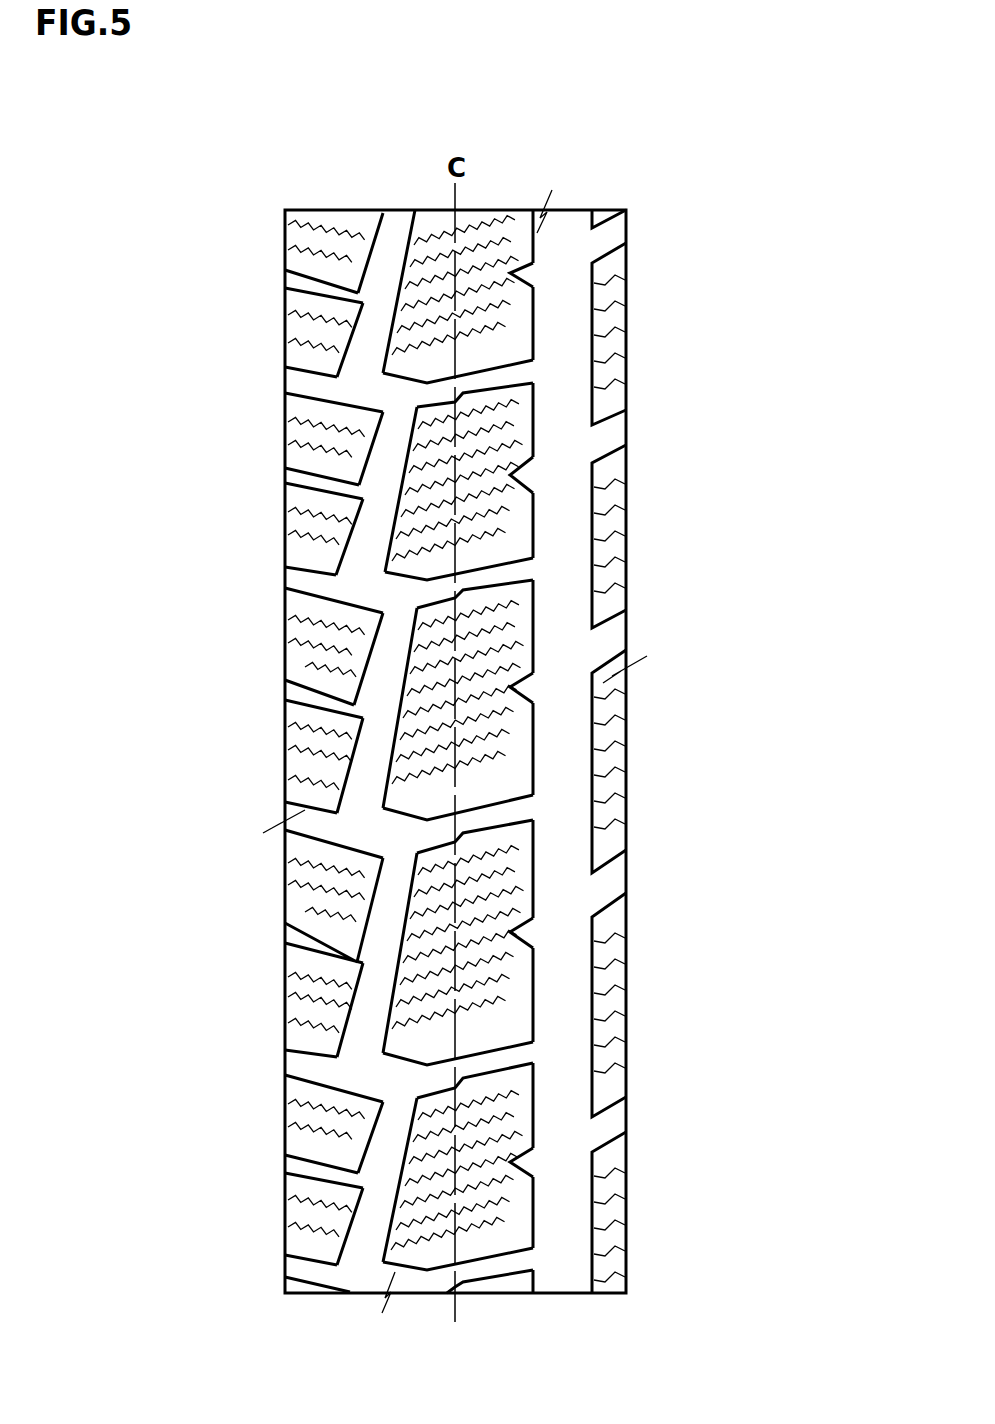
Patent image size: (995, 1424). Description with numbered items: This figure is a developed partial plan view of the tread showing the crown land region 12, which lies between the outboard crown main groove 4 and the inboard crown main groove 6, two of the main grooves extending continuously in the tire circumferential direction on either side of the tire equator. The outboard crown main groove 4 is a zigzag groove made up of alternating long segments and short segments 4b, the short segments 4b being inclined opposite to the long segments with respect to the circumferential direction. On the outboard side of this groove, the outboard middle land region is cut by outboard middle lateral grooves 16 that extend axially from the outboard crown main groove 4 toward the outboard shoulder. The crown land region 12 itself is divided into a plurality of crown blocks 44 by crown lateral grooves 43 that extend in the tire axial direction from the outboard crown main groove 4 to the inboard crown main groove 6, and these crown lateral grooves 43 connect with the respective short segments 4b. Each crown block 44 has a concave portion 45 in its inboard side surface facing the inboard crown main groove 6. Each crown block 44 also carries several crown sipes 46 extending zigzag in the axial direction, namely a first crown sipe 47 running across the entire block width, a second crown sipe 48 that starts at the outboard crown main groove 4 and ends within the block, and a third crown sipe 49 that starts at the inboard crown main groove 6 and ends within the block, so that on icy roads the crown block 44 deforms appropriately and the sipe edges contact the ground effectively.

The outboard crown main groove 4 is at (390, 262).
The short segment 4b is at (376, 398).
The inboard crown main groove 6 is at (563, 267).
The crown land region 12 is at (484, 703).
The outboard middle lateral groove 16 is at (320, 586).
The crown lateral groove 43 is at (487, 383).
The crown block 44 is at (463, 467).
The concave portion 45 is at (528, 688).
The crown sipe 46 is at (591, 732).
The first crown sipe 47 is at (470, 858).
The second crown sipe 48 is at (467, 887).
The third crown sipe 49 is at (492, 907).